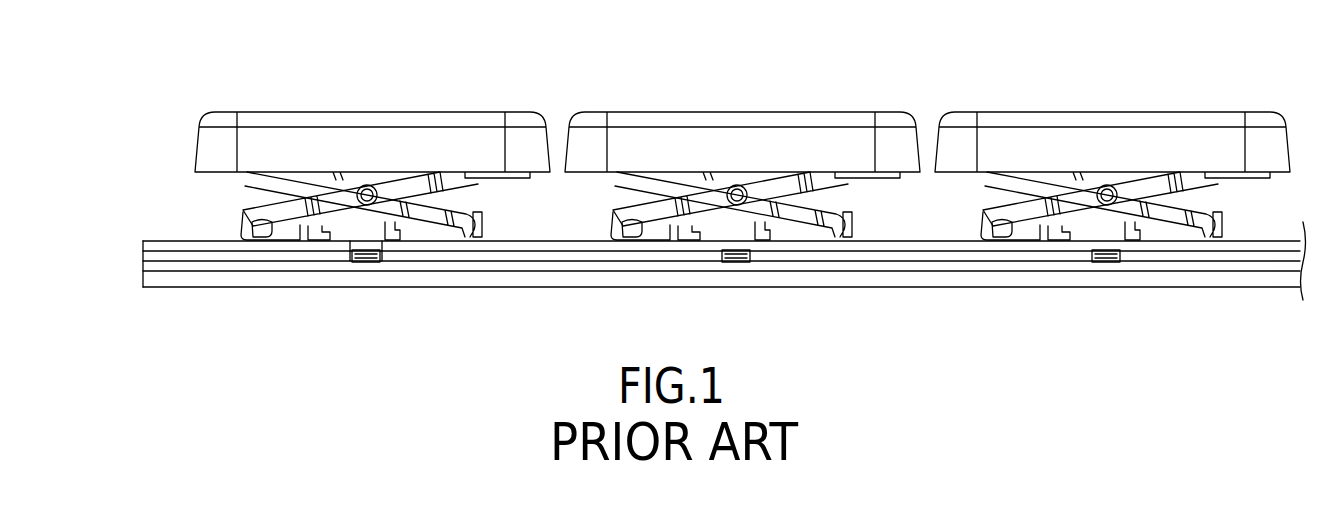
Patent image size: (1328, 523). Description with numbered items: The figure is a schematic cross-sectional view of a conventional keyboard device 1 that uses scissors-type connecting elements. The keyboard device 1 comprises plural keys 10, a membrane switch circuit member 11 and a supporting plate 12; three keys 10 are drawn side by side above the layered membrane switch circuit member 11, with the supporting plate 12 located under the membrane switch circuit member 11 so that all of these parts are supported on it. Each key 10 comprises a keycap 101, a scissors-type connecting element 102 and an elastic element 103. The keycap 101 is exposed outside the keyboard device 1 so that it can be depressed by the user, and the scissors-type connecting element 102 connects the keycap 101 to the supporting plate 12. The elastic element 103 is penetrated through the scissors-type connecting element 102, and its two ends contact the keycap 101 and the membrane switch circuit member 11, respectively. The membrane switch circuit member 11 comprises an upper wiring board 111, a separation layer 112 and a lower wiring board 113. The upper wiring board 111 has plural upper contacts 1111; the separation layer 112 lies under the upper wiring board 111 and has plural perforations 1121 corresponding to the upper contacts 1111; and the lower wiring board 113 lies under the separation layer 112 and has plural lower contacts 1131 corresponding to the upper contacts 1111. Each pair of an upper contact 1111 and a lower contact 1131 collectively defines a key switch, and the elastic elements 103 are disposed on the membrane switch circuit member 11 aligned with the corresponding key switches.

The conventional keyboard device 1 is at (1120, 40).
The key 10 is at (497, 70).
The keycap 101 is at (430, 118).
The scissors-type connecting element 102 is at (388, 193).
The elastic element 103 is at (300, 183).
The membrane switch circuit member 11 is at (83, 180).
The upper wiring board 111 is at (192, 245).
The separation layer 112 is at (167, 255).
The lower wiring board 113 is at (163, 277).
The upper contact 1111 is at (348, 258).
The lower contact 1131 is at (373, 262).
The perforation 1121 is at (380, 258).
The supporting plate 12 is at (213, 278).